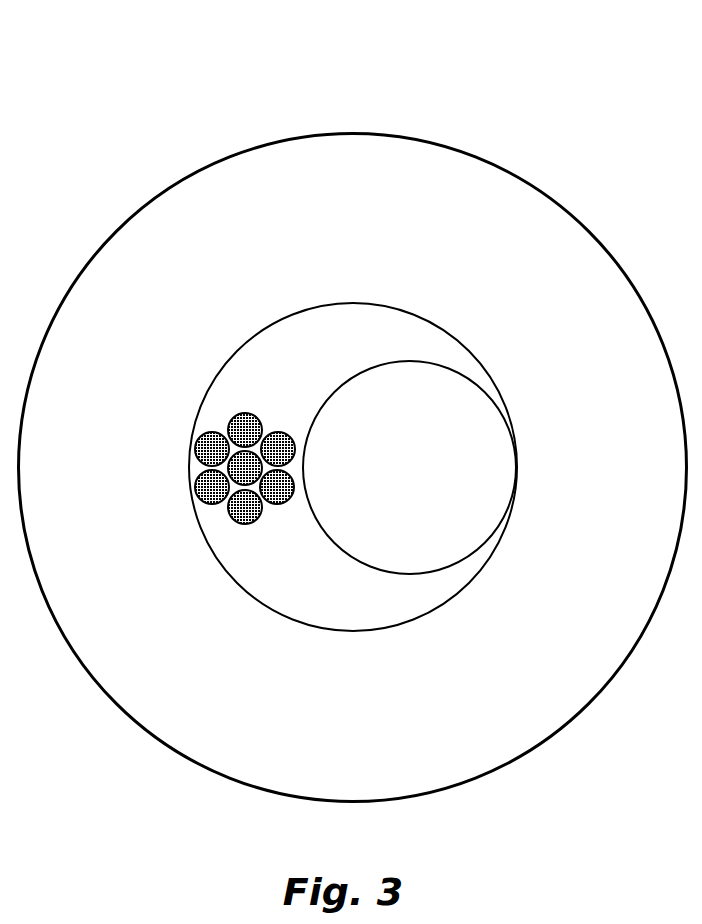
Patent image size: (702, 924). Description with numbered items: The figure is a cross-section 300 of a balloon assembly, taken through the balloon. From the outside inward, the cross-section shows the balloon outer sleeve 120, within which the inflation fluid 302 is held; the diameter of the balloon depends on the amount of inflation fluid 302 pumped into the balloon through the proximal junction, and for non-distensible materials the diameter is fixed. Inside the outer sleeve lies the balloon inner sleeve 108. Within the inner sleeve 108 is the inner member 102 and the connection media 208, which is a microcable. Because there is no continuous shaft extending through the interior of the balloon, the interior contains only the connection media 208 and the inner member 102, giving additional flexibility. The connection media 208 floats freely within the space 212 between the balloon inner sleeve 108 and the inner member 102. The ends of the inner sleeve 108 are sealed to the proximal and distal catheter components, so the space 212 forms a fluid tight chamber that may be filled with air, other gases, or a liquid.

The optical fiber cable cross-section 300 is at (86, 119).
The balloon outer sleeve 120 is at (541, 745).
The inflation fluid 302 is at (488, 237).
The balloon inner sleeve 108 is at (210, 386).
The space 212 is at (308, 585).
The inner member 102 is at (440, 569).
The connection media 208 is at (230, 514).